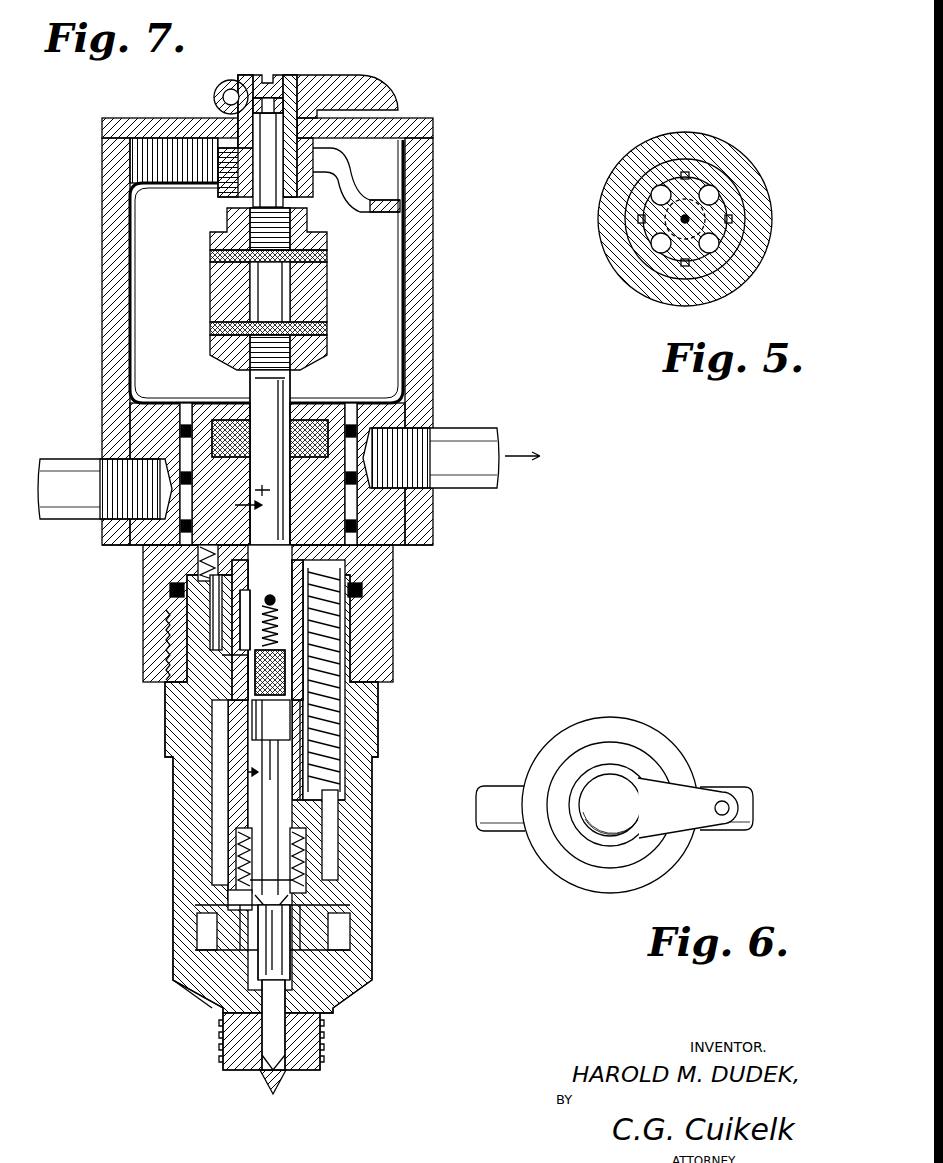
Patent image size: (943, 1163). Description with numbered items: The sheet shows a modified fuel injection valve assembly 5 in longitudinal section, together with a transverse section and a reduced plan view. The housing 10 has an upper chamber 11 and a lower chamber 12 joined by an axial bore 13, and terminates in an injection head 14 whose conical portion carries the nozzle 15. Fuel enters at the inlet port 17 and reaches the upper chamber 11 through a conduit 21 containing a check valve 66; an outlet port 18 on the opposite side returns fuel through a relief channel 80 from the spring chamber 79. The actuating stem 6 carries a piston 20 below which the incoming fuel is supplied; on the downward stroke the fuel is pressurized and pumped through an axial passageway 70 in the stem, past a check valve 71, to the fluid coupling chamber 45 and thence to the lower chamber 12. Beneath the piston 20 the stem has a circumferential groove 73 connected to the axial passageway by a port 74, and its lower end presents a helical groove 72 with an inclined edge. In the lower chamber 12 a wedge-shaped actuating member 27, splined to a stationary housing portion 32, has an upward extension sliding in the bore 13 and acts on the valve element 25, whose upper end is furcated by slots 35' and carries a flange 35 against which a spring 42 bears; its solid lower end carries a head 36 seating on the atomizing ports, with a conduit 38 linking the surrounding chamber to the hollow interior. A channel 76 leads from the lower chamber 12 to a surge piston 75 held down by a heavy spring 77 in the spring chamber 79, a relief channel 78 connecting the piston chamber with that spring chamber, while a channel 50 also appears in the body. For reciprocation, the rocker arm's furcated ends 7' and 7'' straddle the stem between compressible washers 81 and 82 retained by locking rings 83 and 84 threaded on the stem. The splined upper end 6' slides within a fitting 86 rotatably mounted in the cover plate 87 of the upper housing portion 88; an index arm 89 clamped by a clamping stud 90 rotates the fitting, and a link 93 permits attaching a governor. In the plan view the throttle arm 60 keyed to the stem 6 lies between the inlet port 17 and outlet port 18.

In FIG. 7, the injection valve assembly 5 is at (447, 242).
In FIG. 7, the actuating stem 6 is at (289, 469).
In FIG. 7, the splined upper end of stem 6' is at (276, 119).
In FIG. 7, the furcated end portion of rocker arm 7' is at (331, 292).
In FIG. 7, the furcated end portion of rocker arm 7'' is at (229, 292).
In FIG. 7, the housing 10 is at (397, 698).
In FIG. 5, the housing 10 is at (631, 299).
In FIG. 6, the housing 10 is at (667, 720).
In FIG. 7, the upper chamber 11 is at (248, 656).
In FIG. 7, the lower chamber 12 is at (240, 876).
In FIG. 7, the axial bore 13 is at (286, 733).
In FIG. 7, the injection head 14 is at (300, 1025).
In FIG. 7, the nozzle 15 is at (268, 1086).
In FIG. 7, the inlet port 17 is at (72, 462).
In FIG. 6, the inlet port 17 is at (748, 806).
In FIG. 7, the outlet port 18 is at (468, 444).
In FIG. 6, the outlet port 18 is at (506, 790).
In FIG. 7, the piston 20 is at (350, 580).
In FIG. 7, the conduit 21 is at (212, 600).
In FIG. 7, the valve element 25 is at (250, 1008).
In FIG. 7, the wedge-shaped actuating member 27 is at (250, 886).
In FIG. 5, the wedge-shaped actuating member 27 is at (727, 207).
In FIG. 5, the stationary housing portion 32 is at (735, 237).
In FIG. 7, the outwardly extending flange 35 is at (201, 942).
In FIG. 7, the longitudinal slots 35' is at (206, 952).
In FIG. 7, the head 36 is at (292, 1062).
In FIG. 7, the conduit 38 is at (258, 1050).
In FIG. 7, the spring 42 is at (242, 848).
In FIG. 7, the fluid coupling chamber 45 is at (262, 723).
In FIG. 7, the channel 50 is at (222, 768).
In FIG. 6, the arm 60 is at (688, 796).
In FIG. 7, the check valve 66 is at (198, 556).
In FIG. 7, the axial passageway 70 is at (172, 590).
In FIG. 7, the check valve 71 is at (258, 612).
In FIG. 7, the helical groove 72 is at (288, 680).
In FIG. 7, the circumferential groove 73 is at (282, 660).
In FIG. 7, the port 74 is at (305, 630).
In FIG. 7, the piston 75 is at (330, 850).
In FIG. 7, the channel 76 is at (330, 912).
In FIG. 7, the heavy spring 77 is at (342, 762).
In FIG. 7, the relief channel 78 is at (345, 876).
In FIG. 7, the spring chamber 79 is at (342, 718).
In FIG. 7, the relief channel 80 is at (322, 522).
In FIG. 7, the compressible washer 81 is at (320, 258).
In FIG. 7, the compressible washer 82 is at (325, 328).
In FIG. 7, the locking ring 83 is at (214, 248).
In FIG. 7, the locking ring 84 is at (225, 348).
In FIG. 7, the fitting 86 is at (245, 80).
In FIG. 7, the cover plate 87 is at (424, 128).
In FIG. 7, the upper housing portion 88 is at (420, 284).
In FIG. 7, the index arm 89 is at (328, 80).
In FIG. 7, the clamping stud 90 is at (214, 98).
In FIG. 7, the link 93 is at (360, 215).